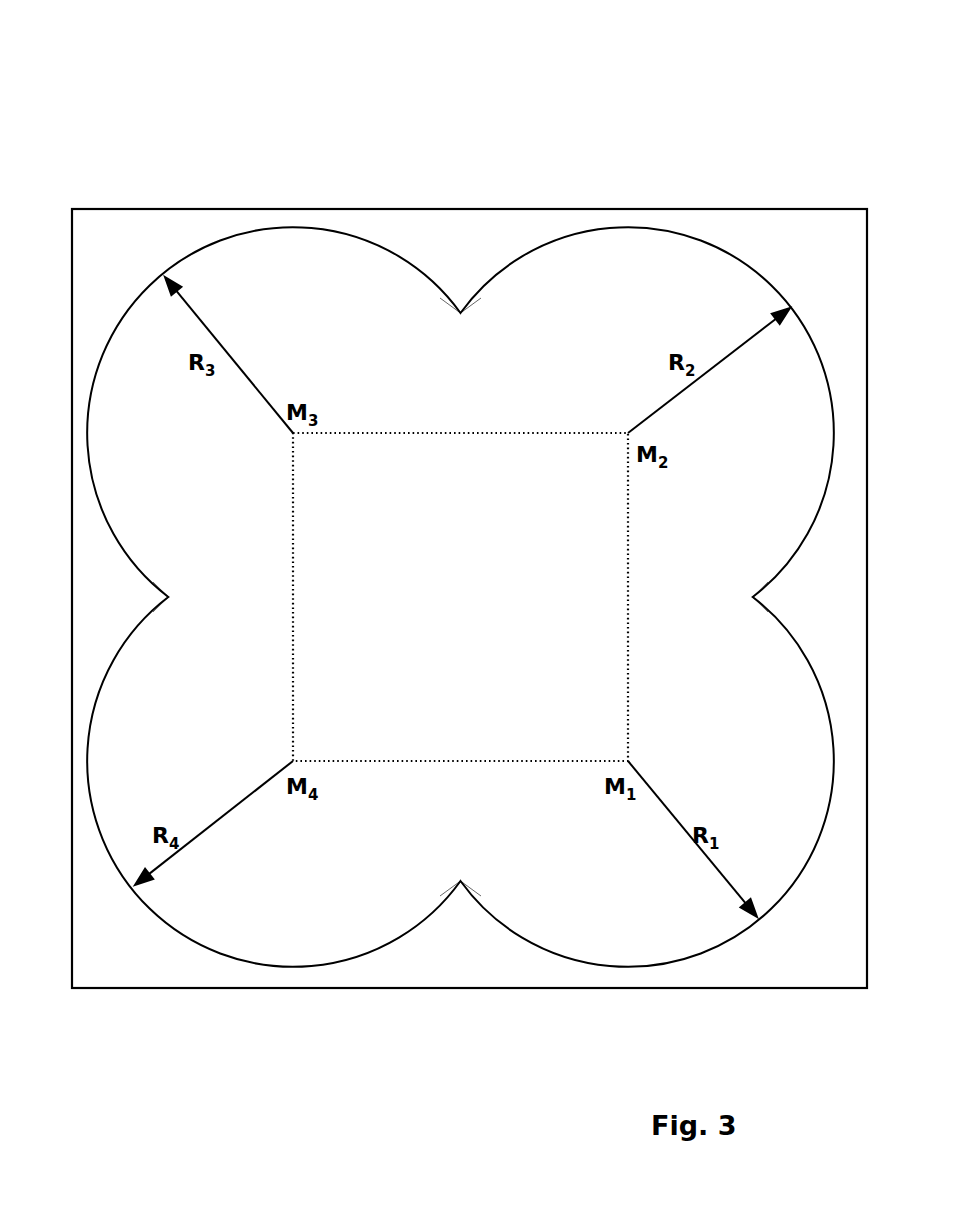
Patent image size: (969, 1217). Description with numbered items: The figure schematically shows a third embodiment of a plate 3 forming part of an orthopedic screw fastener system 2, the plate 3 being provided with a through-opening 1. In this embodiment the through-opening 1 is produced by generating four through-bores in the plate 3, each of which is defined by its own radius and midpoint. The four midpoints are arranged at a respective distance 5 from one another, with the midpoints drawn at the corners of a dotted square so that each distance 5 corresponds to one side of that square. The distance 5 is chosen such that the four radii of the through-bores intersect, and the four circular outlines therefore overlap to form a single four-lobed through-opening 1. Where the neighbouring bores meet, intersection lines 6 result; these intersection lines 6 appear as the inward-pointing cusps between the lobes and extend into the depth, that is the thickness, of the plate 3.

The through-opening 1 is at (211, 1067).
The orthopedic screw fastener system 2 is at (112, 13).
The plate 3 is at (755, 240).
The distance 5 is at (455, 432).
The intersection lines 6 is at (461, 312).